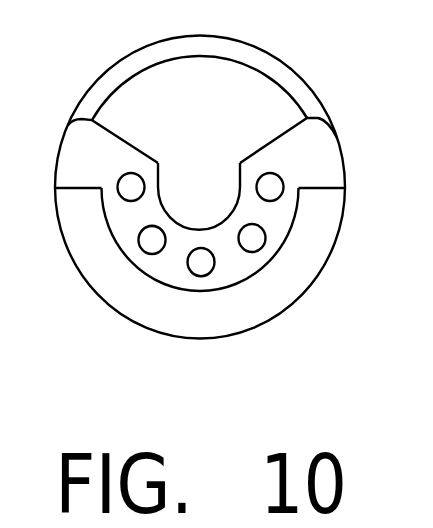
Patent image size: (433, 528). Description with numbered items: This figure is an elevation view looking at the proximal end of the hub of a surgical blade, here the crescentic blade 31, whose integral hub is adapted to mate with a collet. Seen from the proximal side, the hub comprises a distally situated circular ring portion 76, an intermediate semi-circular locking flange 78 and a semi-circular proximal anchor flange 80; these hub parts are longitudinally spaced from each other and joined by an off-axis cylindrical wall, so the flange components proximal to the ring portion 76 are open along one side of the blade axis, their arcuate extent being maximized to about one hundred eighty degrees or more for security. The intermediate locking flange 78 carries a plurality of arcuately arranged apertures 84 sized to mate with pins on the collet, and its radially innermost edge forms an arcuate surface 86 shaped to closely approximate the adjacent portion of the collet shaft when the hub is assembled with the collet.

The crescentic blade 31 is at (100, 82).
The circular ring portion 76 is at (297, 78).
The semi-circular locking flange 78 is at (307, 152).
The semi-circular proximal anchor flange 80 is at (315, 236).
The apertures 84 is at (150, 247).
The arcuate surface 86 is at (162, 195).